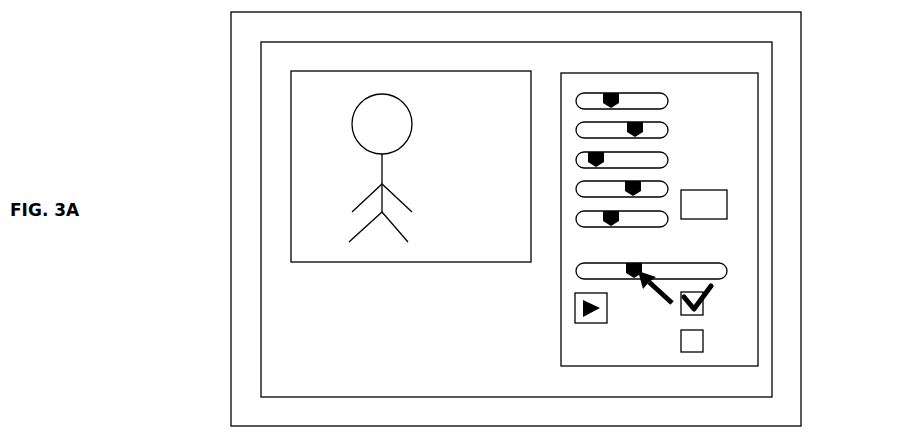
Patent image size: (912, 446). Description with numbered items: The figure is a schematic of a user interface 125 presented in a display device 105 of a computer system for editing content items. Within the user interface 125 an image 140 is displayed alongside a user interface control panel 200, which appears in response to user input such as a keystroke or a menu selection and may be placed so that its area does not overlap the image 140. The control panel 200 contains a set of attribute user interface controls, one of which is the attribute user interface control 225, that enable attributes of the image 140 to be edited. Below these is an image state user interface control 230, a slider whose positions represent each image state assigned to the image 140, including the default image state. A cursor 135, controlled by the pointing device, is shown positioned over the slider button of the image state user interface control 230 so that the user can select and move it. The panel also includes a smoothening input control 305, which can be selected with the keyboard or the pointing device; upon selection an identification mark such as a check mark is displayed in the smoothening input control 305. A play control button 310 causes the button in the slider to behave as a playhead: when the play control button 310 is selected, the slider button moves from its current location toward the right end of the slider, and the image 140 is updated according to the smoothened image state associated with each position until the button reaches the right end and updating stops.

The display device 105 is at (231, 42).
The user interface 125 is at (261, 104).
The image 140 is at (291, 165).
The user interface control panel 200 is at (758, 352).
The attribute user interface control 225 is at (734, 170).
The image state user interface control 230 is at (727, 271).
The smoothening input control 305 is at (788, 307).
The cursor 135 is at (786, 321).
The play control button 310 is at (590, 323).